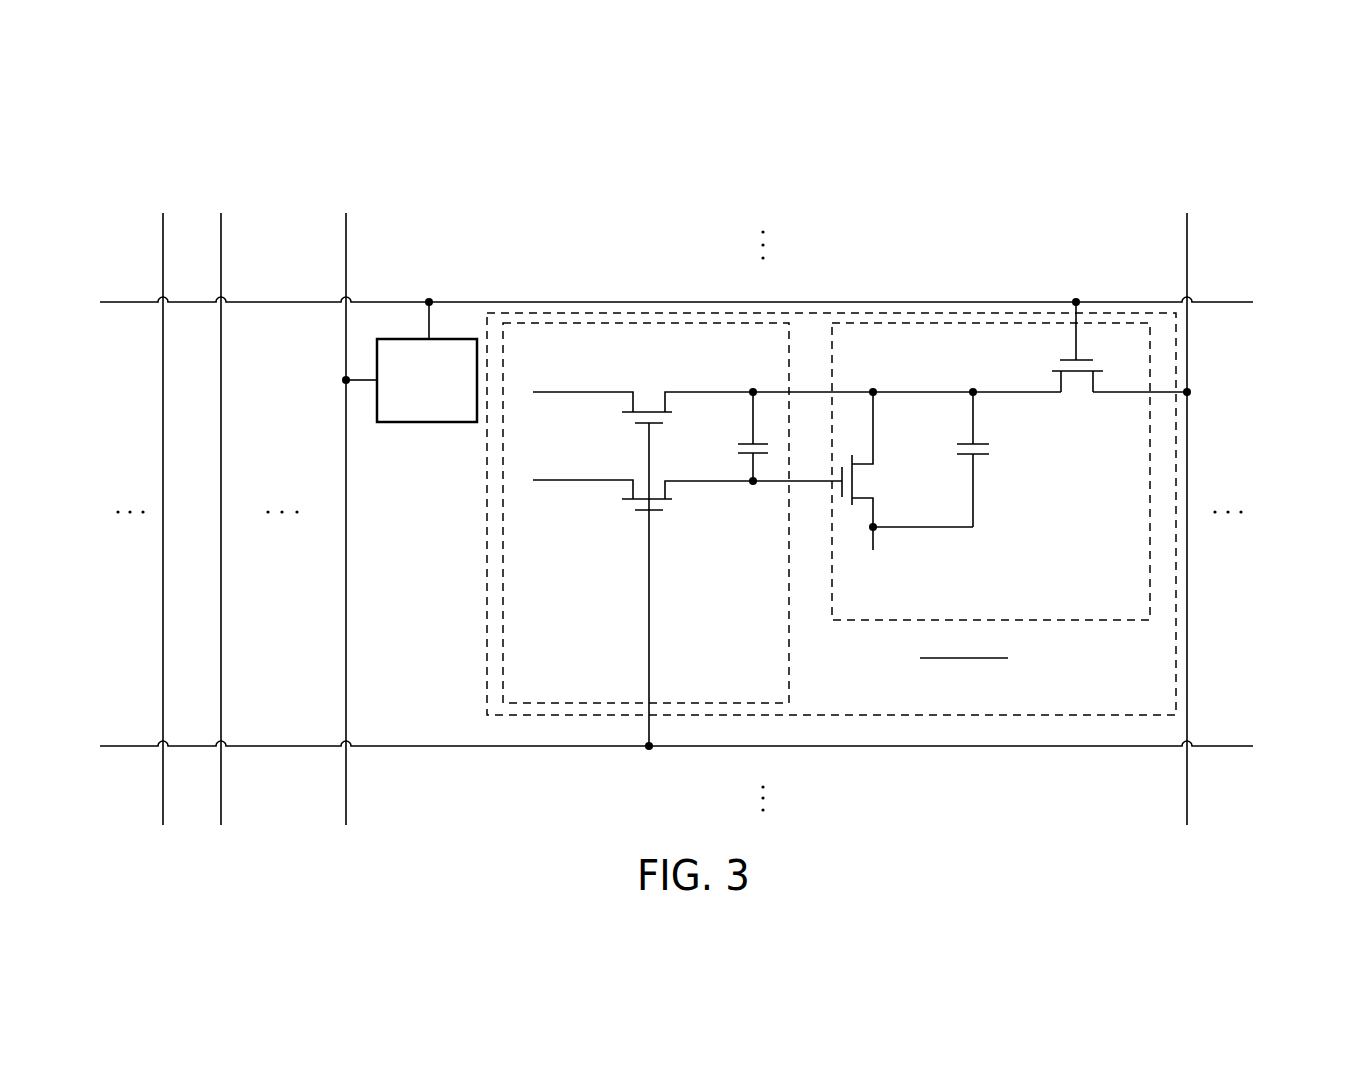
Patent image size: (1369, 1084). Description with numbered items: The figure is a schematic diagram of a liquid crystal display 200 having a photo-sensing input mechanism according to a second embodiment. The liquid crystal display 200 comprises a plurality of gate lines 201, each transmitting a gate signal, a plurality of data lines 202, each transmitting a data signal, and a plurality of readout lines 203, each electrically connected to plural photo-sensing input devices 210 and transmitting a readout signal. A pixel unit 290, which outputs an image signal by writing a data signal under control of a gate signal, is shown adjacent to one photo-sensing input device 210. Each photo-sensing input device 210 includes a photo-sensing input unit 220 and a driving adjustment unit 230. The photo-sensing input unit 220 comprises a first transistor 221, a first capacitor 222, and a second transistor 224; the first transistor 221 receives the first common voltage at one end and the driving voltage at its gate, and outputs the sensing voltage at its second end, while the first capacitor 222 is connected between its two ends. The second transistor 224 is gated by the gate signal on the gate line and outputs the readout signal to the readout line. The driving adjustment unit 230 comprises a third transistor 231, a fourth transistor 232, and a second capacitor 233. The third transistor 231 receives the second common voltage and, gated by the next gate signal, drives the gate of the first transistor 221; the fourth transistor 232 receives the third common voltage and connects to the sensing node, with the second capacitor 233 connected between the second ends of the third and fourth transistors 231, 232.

The liquid crystal display 200 is at (1017, 173).
The gate line 201 is at (255, 308).
The data line 202 is at (221, 271).
The readout line 203 is at (163, 271).
The photo-sensing input device 210 is at (815, 313).
The photo-sensing input unit 220 is at (958, 323).
The first transistor 221 is at (880, 485).
The first capacitor 222 is at (993, 447).
The second transistor 224 is at (1075, 388).
The driving adjustment unit 230 is at (601, 322).
The third transistor 231 is at (632, 489).
The fourth transistor 232 is at (632, 401).
The second capacitor 233 is at (738, 448).
The pixel unit 290 is at (415, 424).